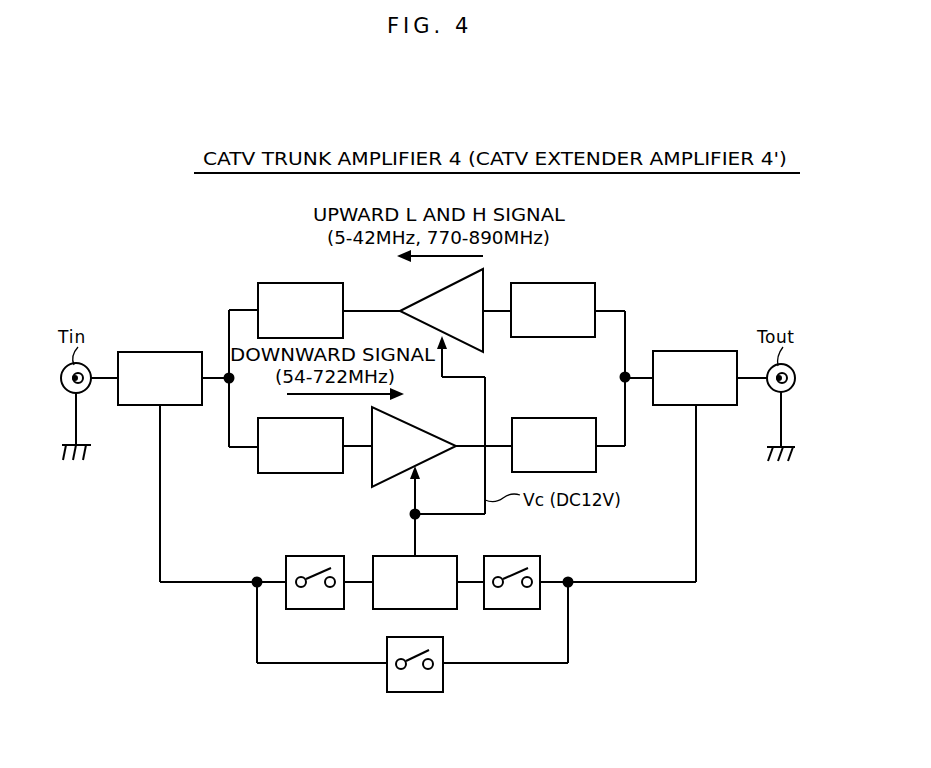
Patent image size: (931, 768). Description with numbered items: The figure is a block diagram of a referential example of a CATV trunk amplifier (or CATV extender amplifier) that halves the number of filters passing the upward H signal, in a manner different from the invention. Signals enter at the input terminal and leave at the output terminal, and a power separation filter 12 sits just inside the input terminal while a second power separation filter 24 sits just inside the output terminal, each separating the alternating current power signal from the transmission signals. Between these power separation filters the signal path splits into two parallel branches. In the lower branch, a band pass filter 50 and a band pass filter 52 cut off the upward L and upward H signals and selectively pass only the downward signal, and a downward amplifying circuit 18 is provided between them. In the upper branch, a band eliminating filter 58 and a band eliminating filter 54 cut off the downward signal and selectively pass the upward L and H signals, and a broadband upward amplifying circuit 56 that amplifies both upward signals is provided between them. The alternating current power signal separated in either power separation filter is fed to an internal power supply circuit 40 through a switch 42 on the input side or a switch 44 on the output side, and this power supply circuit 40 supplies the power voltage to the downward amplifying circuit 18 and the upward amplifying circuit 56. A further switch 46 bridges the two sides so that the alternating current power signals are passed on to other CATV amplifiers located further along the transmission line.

The power separation filter 12 is at (171, 351).
The power separation filter 24 is at (675, 351).
The band eliminating filter 58 is at (277, 283).
The band eliminating filter 54 is at (582, 283).
The band pass filter 50 is at (272, 411).
The band pass filter 52 is at (582, 418).
The broadband upward amplifying circuit 56 is at (415, 302).
The downward amplifying circuit 18 is at (412, 422).
The internal power supply circuit 40 is at (432, 556).
The switch 42 is at (320, 556).
The switch 44 is at (512, 556).
The switch 46 is at (430, 637).